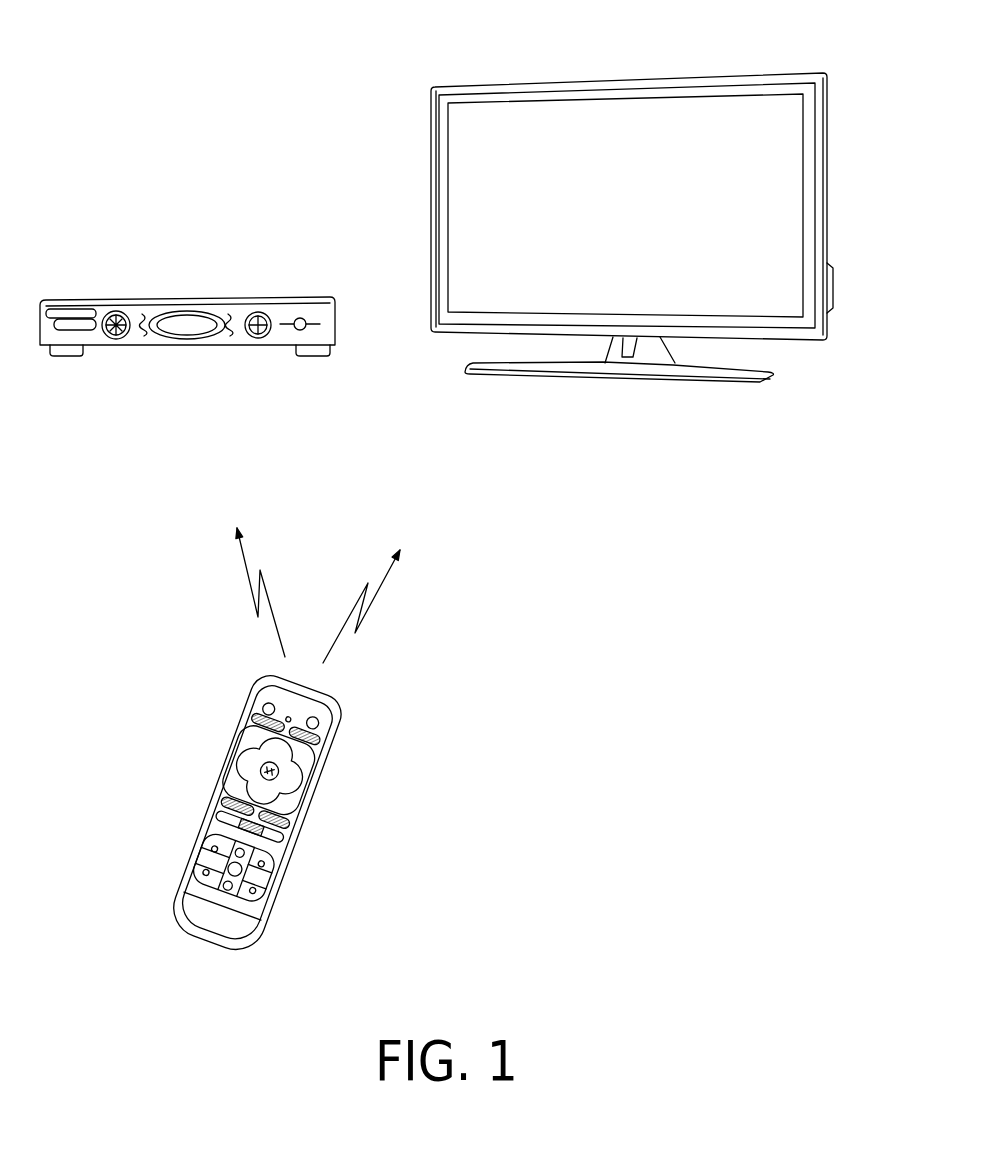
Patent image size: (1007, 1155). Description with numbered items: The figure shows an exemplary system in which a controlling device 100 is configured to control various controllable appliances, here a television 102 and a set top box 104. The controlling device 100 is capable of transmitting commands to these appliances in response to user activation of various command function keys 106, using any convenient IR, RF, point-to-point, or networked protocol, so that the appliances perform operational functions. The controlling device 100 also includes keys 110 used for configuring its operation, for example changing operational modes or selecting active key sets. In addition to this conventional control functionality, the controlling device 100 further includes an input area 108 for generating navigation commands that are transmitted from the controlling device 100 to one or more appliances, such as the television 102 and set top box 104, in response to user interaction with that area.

The controlling device 100 is at (258, 942).
The television 102 is at (494, 88).
The set top box 104 is at (192, 297).
The command function keys 106 is at (192, 782).
The input area 108 is at (293, 812).
The keys 110 is at (238, 680).